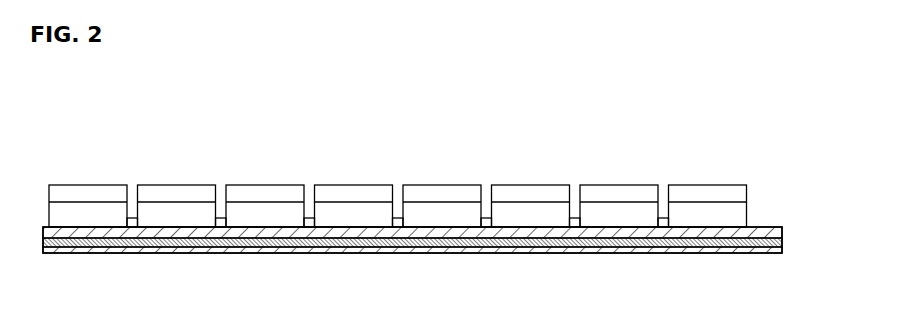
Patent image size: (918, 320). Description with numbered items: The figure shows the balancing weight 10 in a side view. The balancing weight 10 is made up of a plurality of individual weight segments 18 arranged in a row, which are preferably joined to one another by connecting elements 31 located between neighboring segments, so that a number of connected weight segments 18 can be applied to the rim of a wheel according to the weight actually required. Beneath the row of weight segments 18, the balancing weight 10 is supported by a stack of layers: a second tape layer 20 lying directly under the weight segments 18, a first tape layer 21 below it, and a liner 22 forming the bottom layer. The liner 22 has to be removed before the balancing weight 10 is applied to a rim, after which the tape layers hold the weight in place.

The balancing weight 10 is at (443, 167).
The weight segments 18 is at (263, 200).
The connecting elements 31 is at (572, 221).
The second tape layer 20 is at (766, 230).
The first tape layer 21 is at (783, 242).
The liner 22 is at (764, 253).